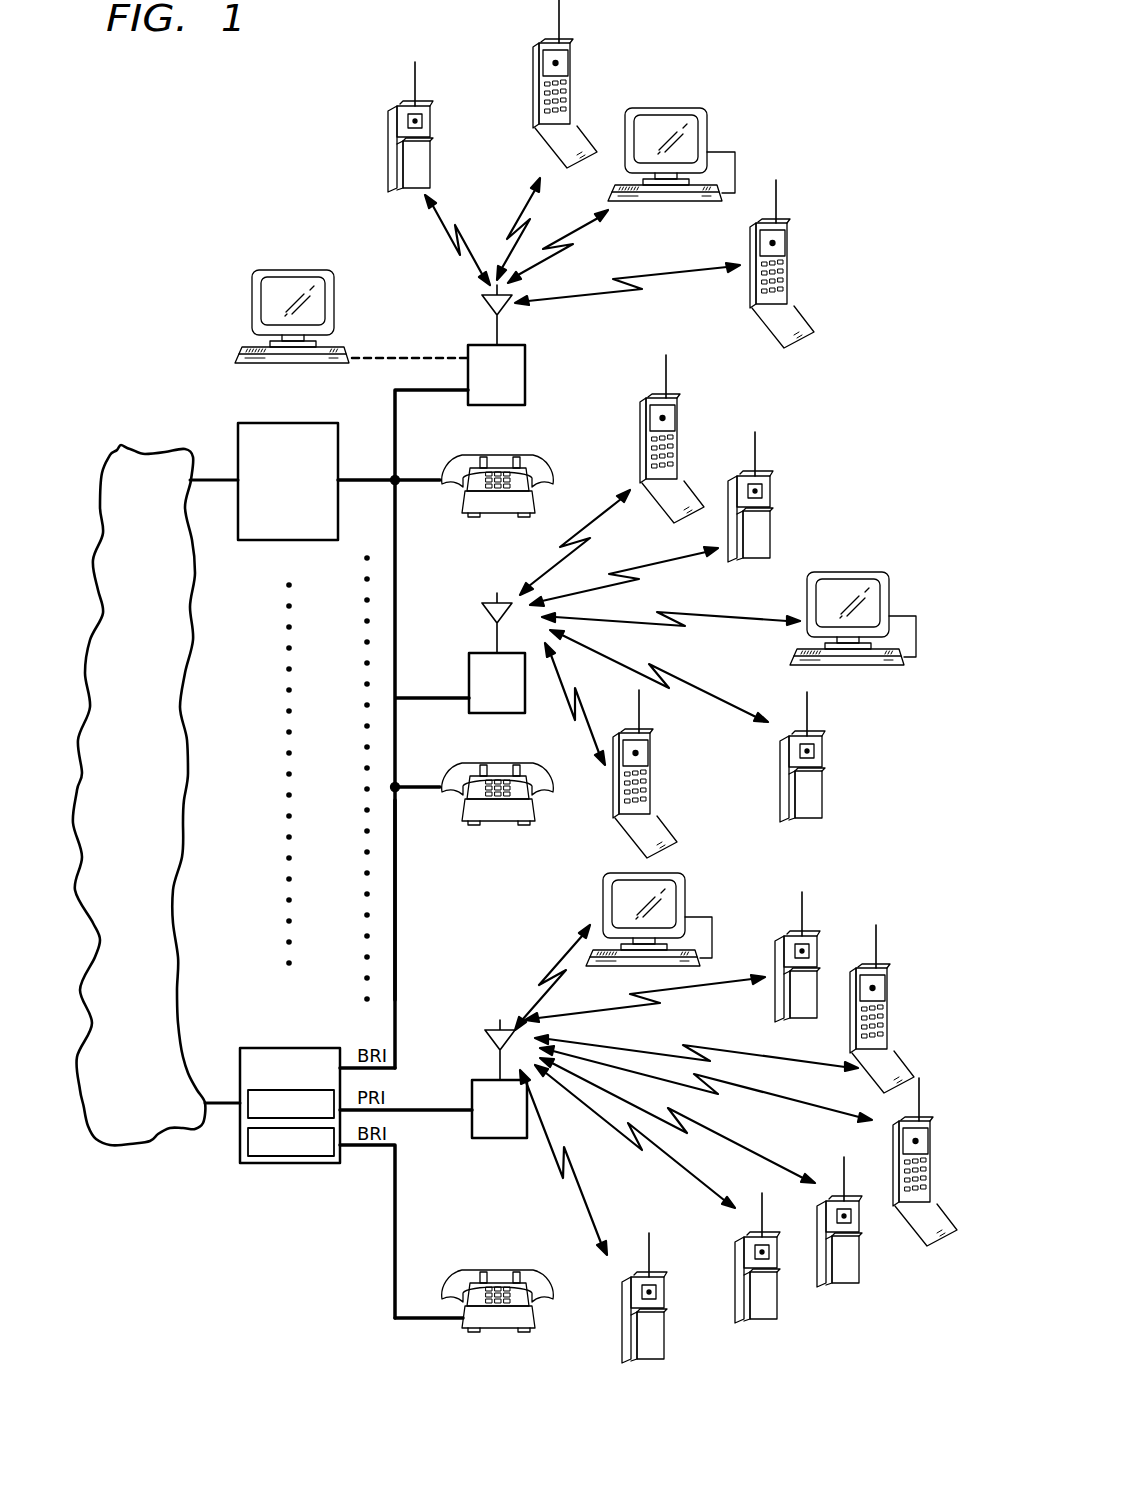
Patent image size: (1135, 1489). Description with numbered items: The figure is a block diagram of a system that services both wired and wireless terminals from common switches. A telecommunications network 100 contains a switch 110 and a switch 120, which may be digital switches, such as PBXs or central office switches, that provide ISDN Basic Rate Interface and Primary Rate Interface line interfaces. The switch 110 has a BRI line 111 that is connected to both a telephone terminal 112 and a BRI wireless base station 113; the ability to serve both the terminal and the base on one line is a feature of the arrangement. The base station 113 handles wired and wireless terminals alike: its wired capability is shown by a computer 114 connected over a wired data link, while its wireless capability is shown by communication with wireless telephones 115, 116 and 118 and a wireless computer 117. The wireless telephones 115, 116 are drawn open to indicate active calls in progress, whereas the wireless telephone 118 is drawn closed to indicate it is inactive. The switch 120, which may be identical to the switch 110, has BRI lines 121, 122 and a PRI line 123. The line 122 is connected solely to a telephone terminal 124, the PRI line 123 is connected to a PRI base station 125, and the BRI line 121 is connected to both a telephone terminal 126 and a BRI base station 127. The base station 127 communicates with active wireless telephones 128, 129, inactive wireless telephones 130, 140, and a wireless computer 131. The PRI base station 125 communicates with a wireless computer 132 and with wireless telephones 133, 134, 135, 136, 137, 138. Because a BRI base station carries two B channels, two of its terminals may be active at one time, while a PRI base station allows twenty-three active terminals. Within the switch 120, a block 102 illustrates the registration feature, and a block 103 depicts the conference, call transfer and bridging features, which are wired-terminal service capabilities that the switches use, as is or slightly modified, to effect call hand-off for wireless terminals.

The network 100 is at (162, 453).
The registration block 102 is at (258, 1163).
The conference, call transfer and bridging block 103 is at (243, 1092).
The switch 110 is at (270, 423).
The BRI line 111 is at (383, 500).
The telephone terminal 112 is at (515, 452).
The BRI wireless base station 113 is at (526, 388).
The computer 114 is at (268, 270).
The wireless telephone 115 is at (788, 238).
The wireless telephone 116 is at (533, 78).
The wireless computer 117 is at (663, 108).
The wireless telephone 118 is at (390, 118).
The switch 120 is at (256, 1048).
The BRI line 121 is at (398, 911).
The BRI line 122 is at (402, 1236).
The PRI line 123 is at (408, 1108).
The telephone terminal 124 is at (511, 1267).
The PRI base station 125 is at (472, 1131).
The telephone terminal 126 is at (512, 758).
The BRI base station 127 is at (469, 660).
The wireless telephone 128 is at (690, 408).
The wireless telephone 129 is at (654, 755).
The wireless telephone 130 is at (775, 486).
The wireless computer 131 is at (844, 572).
The wireless computer 132 is at (684, 897).
The wireless telephone 133 is at (818, 958).
The wireless telephone 134 is at (890, 1026).
The wireless telephone 135 is at (895, 1124).
The wireless telephone 136 is at (860, 1264).
The wireless telephone 137 is at (775, 1300).
The wireless telephone 138 is at (665, 1288).
The wireless telephone 140 is at (823, 747).